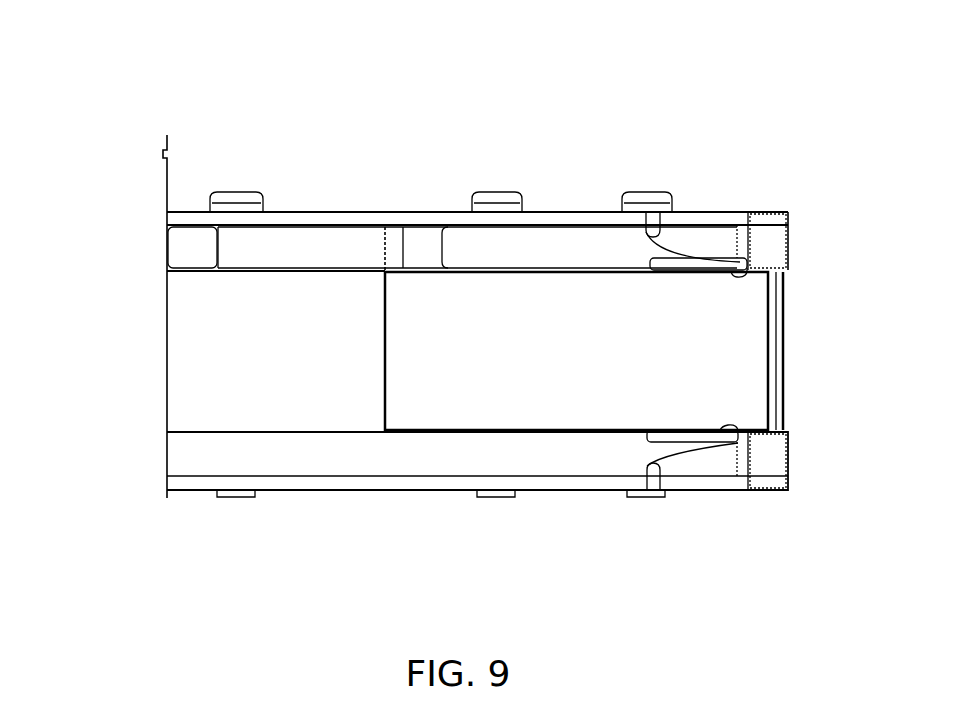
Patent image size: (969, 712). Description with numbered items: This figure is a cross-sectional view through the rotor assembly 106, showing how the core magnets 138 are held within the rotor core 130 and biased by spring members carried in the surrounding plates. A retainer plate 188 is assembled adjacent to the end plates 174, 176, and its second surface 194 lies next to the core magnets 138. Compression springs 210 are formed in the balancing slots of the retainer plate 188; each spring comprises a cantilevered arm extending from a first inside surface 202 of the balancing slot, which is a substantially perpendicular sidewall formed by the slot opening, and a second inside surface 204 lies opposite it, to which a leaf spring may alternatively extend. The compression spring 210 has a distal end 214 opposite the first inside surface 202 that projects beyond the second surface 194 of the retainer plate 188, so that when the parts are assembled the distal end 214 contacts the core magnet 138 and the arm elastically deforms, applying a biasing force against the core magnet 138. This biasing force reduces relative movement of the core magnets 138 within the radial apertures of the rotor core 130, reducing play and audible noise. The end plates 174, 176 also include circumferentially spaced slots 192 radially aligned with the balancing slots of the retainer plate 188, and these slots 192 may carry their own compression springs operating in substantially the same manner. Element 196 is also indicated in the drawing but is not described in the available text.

The rotor assembly 106 is at (110, 119).
The rotor core 130 is at (142, 335).
The core magnets 138 is at (757, 360).
The end plate 174 is at (790, 220).
The end plate 176 is at (782, 484).
The retainer plate 188 is at (177, 250).
The circumferentially spaced slots 192 is at (585, 225).
The second surface 194 is at (654, 236).
The slot 196 is at (753, 221).
The first inside surface 202 is at (683, 246).
The second inside surface 204 is at (744, 234).
The compression spring 210 is at (740, 215).
The distal end 214 is at (733, 275).